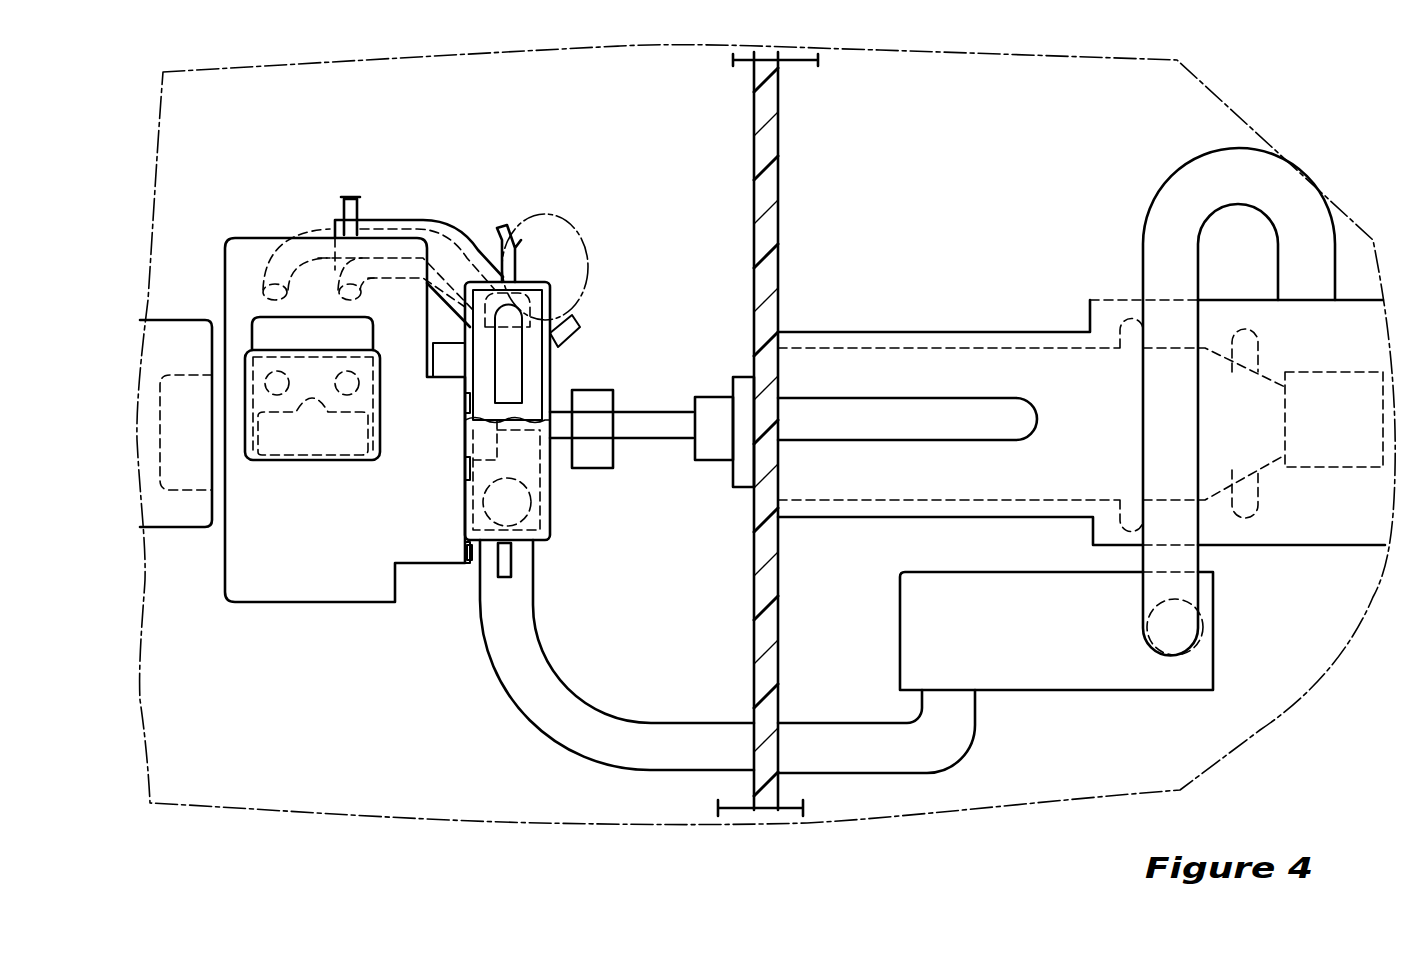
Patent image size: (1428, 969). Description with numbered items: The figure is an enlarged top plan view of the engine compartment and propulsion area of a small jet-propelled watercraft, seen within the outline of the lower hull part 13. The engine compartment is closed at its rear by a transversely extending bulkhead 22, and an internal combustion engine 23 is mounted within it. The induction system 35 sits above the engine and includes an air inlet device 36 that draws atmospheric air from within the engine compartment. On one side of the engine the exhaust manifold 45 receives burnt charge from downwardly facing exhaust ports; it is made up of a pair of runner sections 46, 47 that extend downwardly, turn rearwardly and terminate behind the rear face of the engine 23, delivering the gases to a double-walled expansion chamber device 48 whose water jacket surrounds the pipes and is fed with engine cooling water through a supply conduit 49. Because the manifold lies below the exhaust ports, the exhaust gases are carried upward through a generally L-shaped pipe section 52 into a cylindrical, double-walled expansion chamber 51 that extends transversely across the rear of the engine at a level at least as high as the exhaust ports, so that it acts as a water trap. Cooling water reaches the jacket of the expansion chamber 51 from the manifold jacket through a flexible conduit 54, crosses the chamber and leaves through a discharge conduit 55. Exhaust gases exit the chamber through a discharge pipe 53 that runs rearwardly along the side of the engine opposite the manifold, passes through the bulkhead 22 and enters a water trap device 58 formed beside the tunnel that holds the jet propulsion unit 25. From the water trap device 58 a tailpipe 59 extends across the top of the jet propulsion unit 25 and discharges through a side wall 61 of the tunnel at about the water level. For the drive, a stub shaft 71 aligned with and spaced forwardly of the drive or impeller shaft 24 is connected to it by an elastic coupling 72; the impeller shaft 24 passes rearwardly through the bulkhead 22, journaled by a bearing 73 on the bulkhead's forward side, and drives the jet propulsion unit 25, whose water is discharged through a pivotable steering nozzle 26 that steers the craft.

The lower hull part 13 is at (1290, 705).
The bulkhead 22 is at (752, 675).
The internal combustion engine 23 is at (282, 605).
The drive or impeller shaft 24 is at (676, 407).
The jet propulsion unit 25 is at (930, 334).
The steering nozzle 26 is at (1318, 470).
The induction system 35 is at (358, 467).
The air inlet device 36 is at (256, 462).
The exhaust manifold 45 is at (470, 233).
The runner section 46 is at (283, 260).
The runner section 47 is at (322, 262).
The expansion chamber device 48 is at (428, 220).
The supply conduit 49 is at (355, 206).
The expansion chamber 51 is at (553, 373).
The L-shaped pipe section 52 is at (522, 350).
The discharge pipe 53 is at (527, 710).
The flexible conduit 54 is at (578, 336).
The discharge conduit 55 is at (495, 566).
The water trap device 58 is at (1023, 692).
The tailpipe 59 is at (1143, 222).
The side wall of the tunnel 61 is at (1353, 302).
The stub shaft 71 is at (553, 448).
The elastic coupling 72 is at (620, 458).
The bearing 73 is at (732, 490).